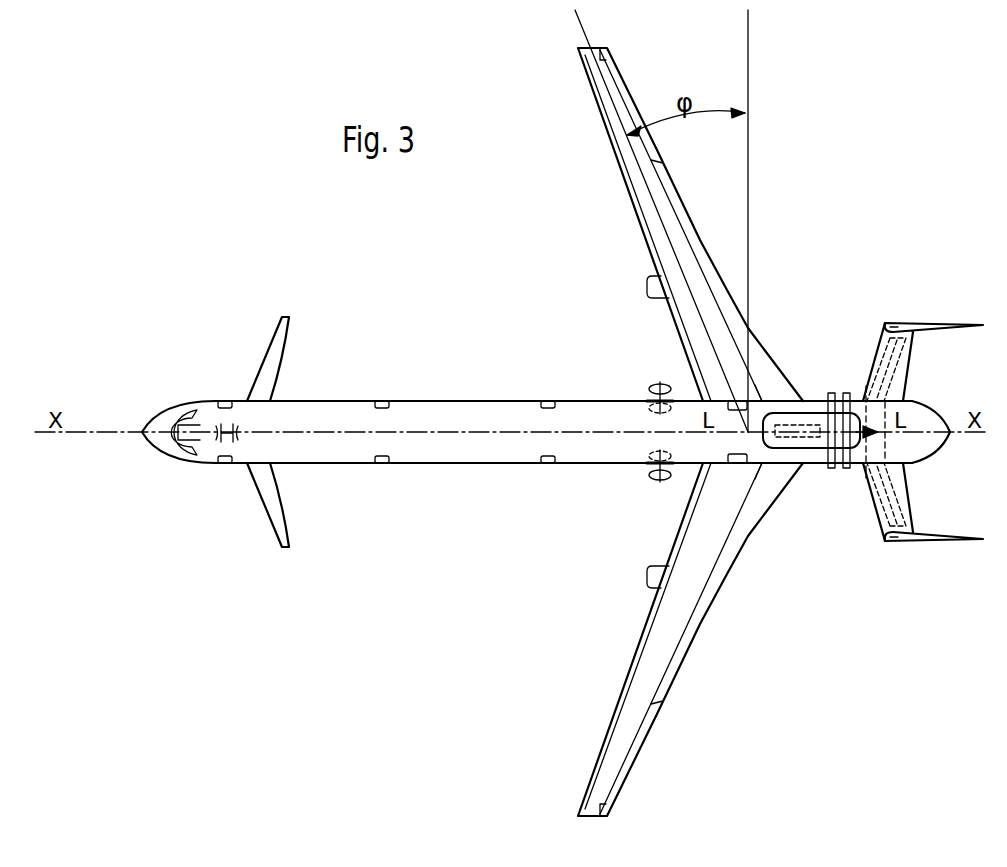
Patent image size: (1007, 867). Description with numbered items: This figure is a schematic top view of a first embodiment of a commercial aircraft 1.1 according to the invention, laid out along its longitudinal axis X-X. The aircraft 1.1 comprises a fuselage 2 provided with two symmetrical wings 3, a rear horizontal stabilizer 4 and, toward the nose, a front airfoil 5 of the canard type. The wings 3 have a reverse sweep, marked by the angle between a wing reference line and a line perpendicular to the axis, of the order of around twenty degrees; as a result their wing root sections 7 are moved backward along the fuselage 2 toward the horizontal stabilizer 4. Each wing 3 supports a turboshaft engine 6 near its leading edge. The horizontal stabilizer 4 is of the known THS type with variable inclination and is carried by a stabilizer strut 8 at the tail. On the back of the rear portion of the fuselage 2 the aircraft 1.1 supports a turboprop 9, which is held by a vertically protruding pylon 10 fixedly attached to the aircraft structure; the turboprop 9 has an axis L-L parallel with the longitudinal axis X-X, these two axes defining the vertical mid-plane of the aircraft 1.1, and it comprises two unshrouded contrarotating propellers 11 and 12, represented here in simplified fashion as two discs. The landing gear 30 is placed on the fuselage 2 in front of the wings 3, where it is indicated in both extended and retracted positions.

The commercial aircraft 1.1 is at (497, 360).
The fuselage 2 is at (477, 452).
The wings 3 is at (642, 200).
The rear horizontal stabilizer 4 is at (905, 360).
The front airfoil 5 is at (270, 368).
The turboshaft engine 6 is at (646, 288).
The wing root sections 7 is at (765, 388).
The stabilizer strut 8 is at (878, 360).
The turboprop 9 is at (816, 449).
The pylon 10 is at (795, 440).
The contrarotating propeller 11 is at (831, 392).
The contrarotating propeller 12 is at (846, 392).
The landing gear 30 is at (653, 382).